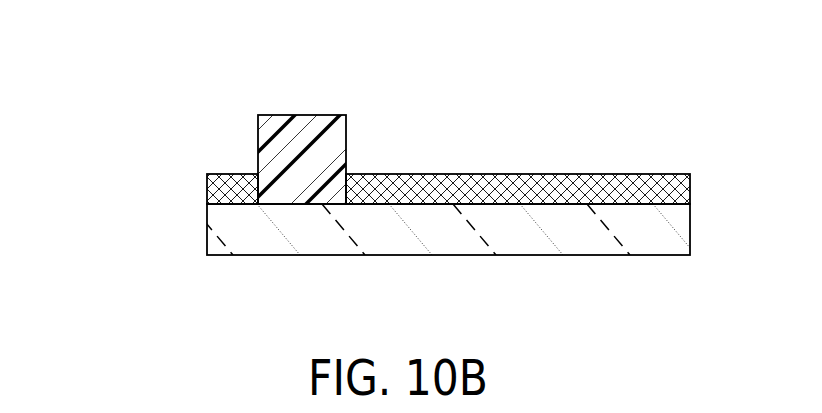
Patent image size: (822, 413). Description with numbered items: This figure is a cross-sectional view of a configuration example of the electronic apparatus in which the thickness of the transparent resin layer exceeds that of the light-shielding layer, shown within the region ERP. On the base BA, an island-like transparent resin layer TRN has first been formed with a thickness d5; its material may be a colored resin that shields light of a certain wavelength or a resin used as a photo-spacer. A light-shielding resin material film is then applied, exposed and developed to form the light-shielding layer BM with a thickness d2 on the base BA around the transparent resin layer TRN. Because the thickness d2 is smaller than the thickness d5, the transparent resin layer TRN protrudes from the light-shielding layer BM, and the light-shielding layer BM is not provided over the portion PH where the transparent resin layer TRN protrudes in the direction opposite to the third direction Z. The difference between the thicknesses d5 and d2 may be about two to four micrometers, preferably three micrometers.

The base BA is at (547, 243).
The light-shielding layer BM is at (227, 192).
The transparent resin layer TRN is at (343, 128).
The pinhole PH is at (347, 109).
The end region portion ERP is at (632, 84).
The thickness of the transparent resin layer d5 is at (258, 115).
The thickness of the light-shielding layer d2 is at (739, 135).
The third direction Z is at (61, 125).